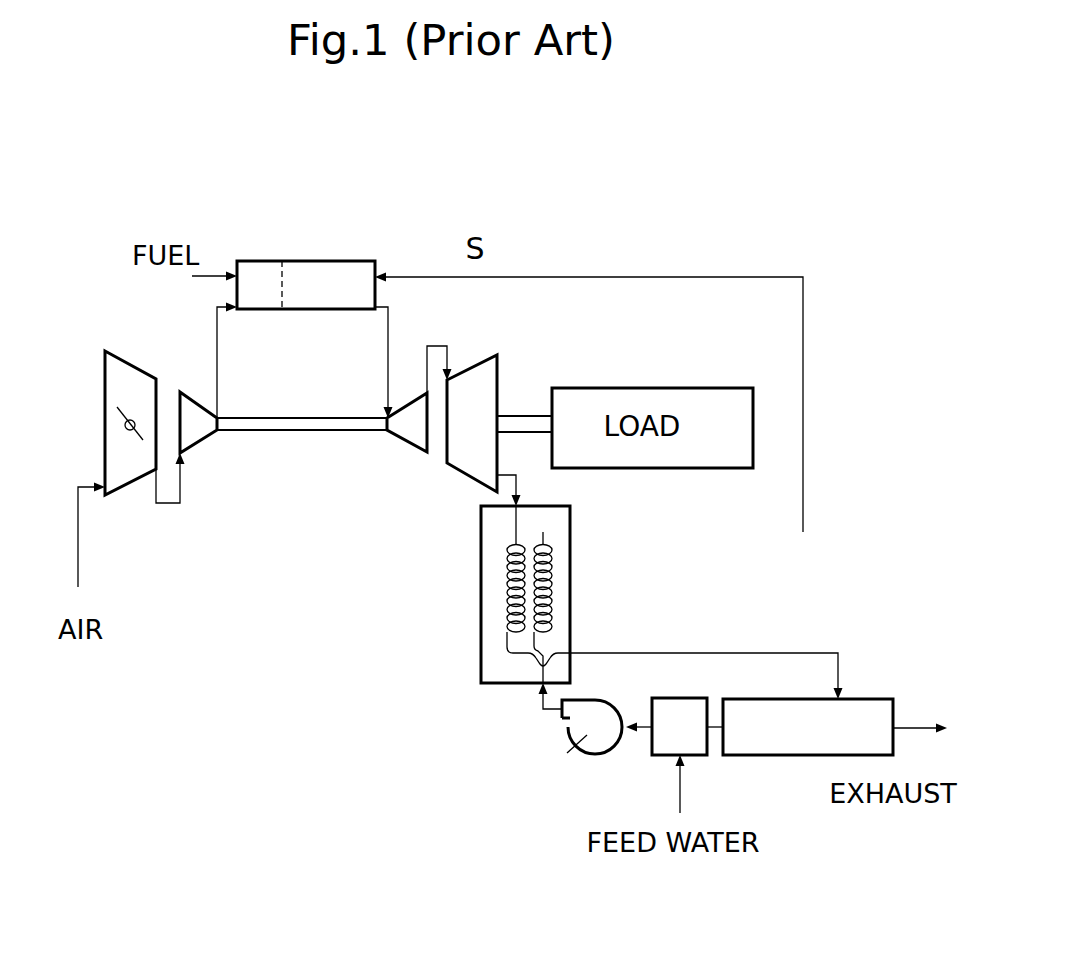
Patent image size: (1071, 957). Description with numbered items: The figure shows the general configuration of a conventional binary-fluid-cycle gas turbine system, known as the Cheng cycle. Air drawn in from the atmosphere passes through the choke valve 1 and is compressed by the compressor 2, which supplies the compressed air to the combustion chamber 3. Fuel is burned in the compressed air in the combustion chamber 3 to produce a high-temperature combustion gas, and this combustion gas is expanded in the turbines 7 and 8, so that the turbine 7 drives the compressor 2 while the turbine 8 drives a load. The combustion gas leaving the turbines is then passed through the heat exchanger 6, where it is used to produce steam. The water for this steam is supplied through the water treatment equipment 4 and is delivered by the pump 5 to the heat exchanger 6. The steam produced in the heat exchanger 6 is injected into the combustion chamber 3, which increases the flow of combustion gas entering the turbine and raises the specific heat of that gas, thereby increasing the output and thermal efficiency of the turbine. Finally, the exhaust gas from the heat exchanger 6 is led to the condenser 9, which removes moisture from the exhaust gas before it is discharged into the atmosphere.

The choke valve 1 is at (123, 470).
The compressor 2 is at (198, 429).
The combustion chamber 3 is at (332, 278).
The water treatment equipment 4 is at (687, 698).
The pump 5 is at (577, 747).
The heat exchanger 6 is at (570, 617).
The turbine 7 is at (409, 430).
The turbine 8 is at (485, 390).
The condenser 9 is at (870, 699).